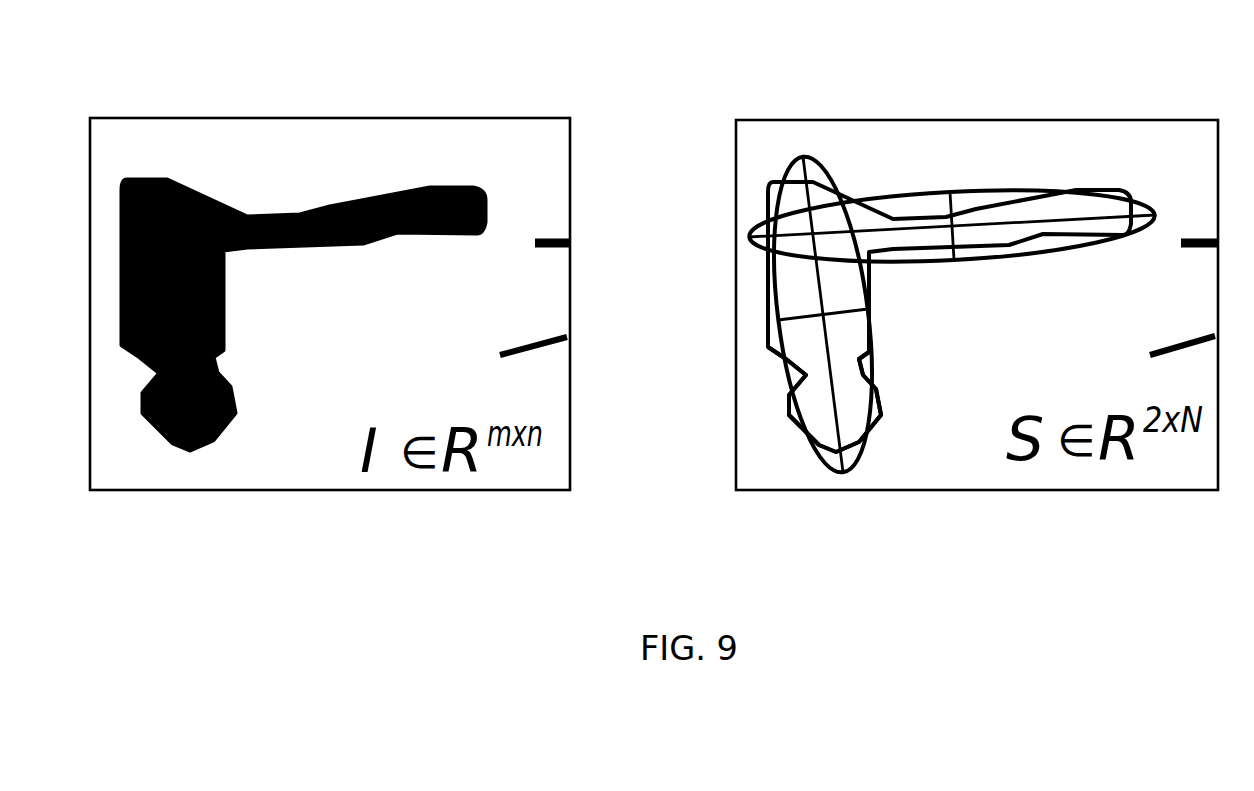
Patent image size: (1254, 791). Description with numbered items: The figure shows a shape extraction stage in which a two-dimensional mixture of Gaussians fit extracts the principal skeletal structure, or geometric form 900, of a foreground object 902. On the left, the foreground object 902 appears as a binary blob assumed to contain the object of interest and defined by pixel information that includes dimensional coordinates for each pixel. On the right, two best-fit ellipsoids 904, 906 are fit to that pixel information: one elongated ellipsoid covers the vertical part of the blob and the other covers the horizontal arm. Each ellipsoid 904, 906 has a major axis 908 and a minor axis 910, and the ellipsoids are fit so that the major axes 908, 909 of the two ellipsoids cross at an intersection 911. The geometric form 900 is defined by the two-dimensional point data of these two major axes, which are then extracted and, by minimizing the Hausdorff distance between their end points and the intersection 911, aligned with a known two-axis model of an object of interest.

The geometric form 900 is at (774, 192).
The foreground object 902 is at (338, 212).
The ellipsoid 904 is at (870, 386).
The ellipsoid 906 is at (992, 188).
The major axis 908 is at (822, 359).
The major axis 909 is at (1107, 215).
The minor axis 910 is at (810, 310).
The intersection 911 is at (840, 190).